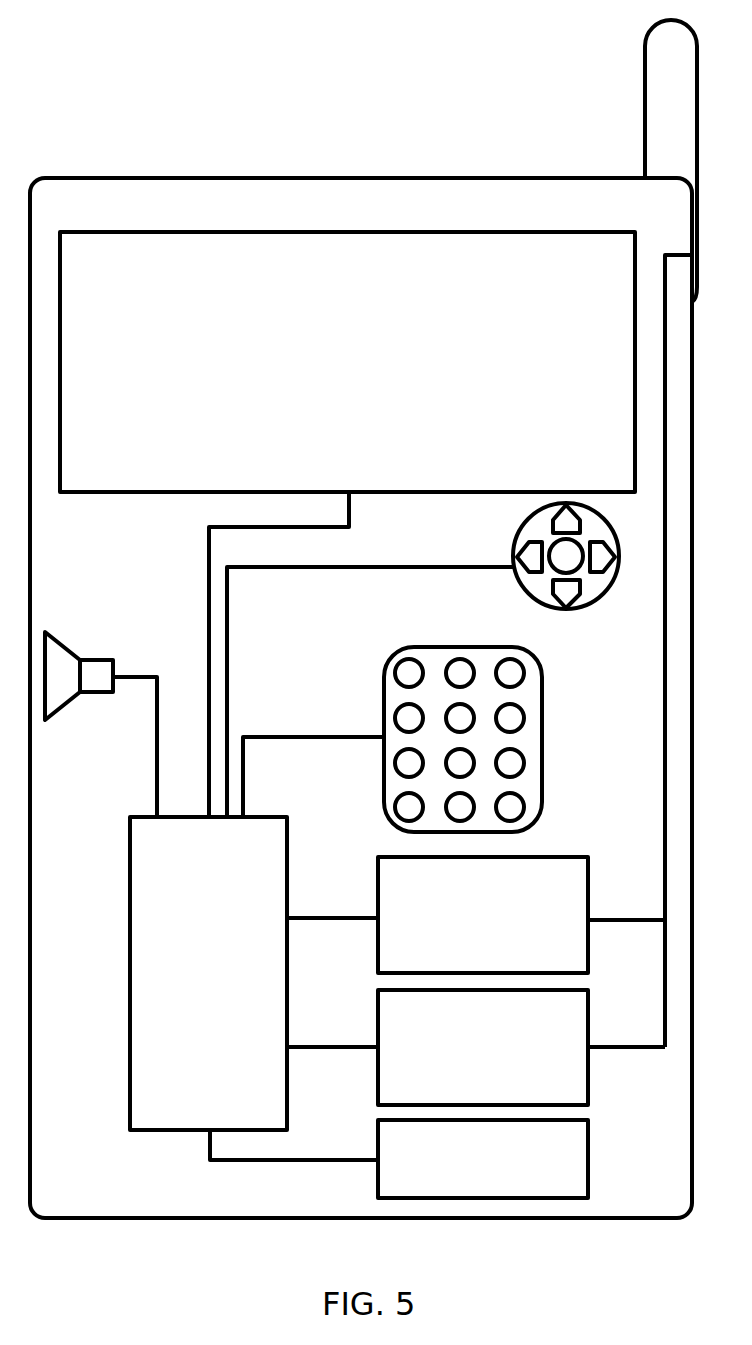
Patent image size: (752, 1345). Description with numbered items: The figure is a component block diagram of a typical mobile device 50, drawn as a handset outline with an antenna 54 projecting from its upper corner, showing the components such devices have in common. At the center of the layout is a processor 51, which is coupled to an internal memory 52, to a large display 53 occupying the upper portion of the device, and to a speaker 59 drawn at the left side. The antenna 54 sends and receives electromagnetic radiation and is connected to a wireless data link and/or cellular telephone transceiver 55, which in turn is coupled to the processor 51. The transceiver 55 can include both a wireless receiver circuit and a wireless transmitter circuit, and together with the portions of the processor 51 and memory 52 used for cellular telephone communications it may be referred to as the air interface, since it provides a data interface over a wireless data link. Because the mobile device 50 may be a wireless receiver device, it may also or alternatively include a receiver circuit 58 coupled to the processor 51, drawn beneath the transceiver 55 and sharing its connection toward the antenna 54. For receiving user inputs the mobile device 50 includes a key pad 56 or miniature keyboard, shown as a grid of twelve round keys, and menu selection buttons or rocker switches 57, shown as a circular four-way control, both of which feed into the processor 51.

The mobile device 50 is at (303, 178).
The processor 51 is at (208, 973).
The internal memory 52 is at (399, 1159).
The display 53 is at (347, 524).
The antenna 54 is at (644, 52).
The transceiver 55 is at (476, 915).
The key pad 56 is at (542, 737).
The rocker switches 57 is at (566, 609).
The receiver circuit 58 is at (476, 1047).
The speaker 59 is at (113, 670).